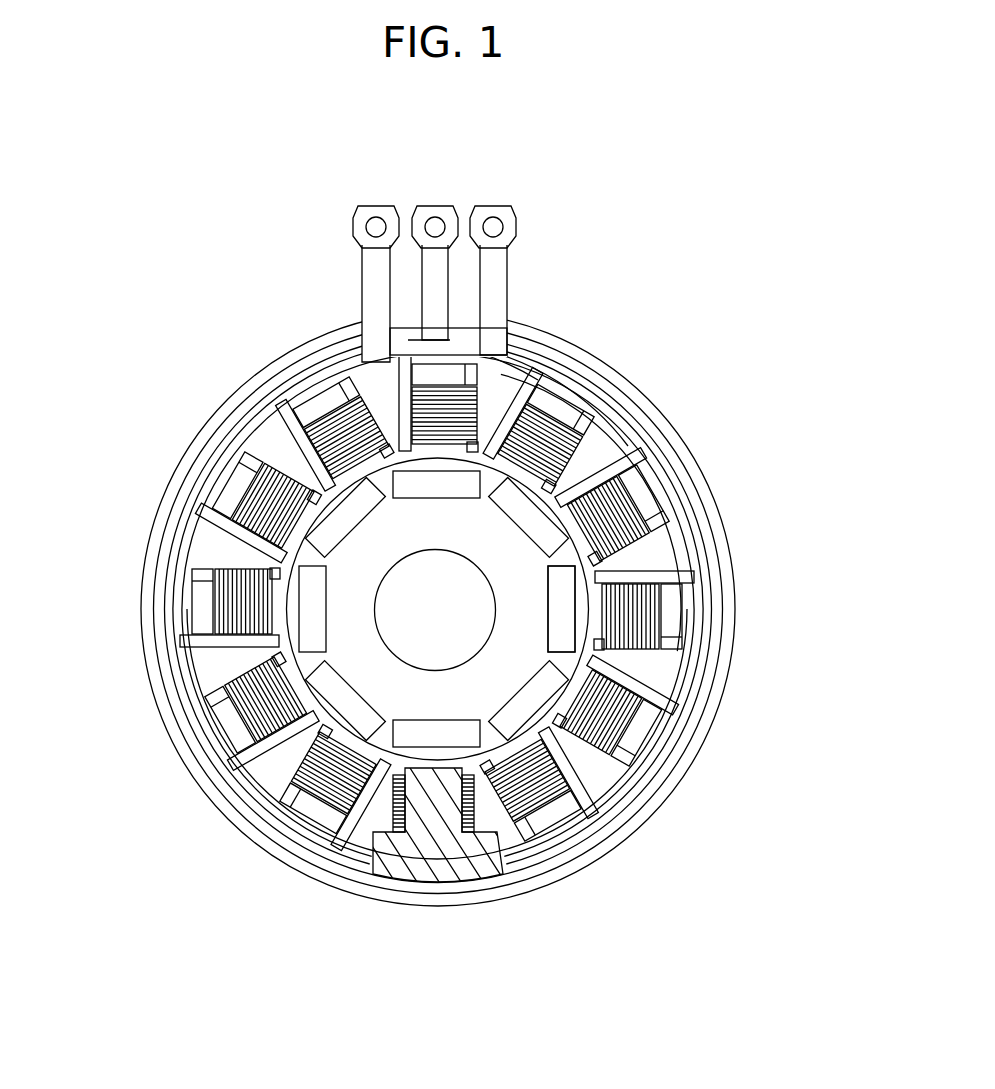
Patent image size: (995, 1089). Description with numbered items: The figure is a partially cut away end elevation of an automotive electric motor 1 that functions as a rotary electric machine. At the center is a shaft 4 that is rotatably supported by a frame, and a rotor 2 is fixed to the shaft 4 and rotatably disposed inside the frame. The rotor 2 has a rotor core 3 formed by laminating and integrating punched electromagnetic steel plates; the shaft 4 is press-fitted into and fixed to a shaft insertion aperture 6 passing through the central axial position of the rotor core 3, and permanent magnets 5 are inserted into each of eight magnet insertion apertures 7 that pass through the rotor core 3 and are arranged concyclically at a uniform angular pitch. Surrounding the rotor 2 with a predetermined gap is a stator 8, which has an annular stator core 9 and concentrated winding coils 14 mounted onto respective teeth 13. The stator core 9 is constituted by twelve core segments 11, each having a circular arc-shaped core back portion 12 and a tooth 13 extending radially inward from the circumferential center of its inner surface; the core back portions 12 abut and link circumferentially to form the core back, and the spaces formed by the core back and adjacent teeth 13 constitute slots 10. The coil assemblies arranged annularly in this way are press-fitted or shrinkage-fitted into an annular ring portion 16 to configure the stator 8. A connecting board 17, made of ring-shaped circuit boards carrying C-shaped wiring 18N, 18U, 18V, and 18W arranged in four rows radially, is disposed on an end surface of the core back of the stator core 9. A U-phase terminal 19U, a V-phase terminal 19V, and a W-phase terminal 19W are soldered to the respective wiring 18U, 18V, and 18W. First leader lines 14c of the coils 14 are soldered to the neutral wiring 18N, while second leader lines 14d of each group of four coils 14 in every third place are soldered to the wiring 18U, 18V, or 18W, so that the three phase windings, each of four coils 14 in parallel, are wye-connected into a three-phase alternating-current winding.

The automotive electric motor 1 is at (151, 151).
The rotor 2 is at (531, 624).
The rotor core 3 is at (572, 554).
The shaft 4 is at (605, 772).
The permanent magnets 5 is at (568, 601).
The shaft insertion aperture 6 is at (453, 650).
The magnet insertion apertures 7 is at (573, 637).
The stator 8 is at (402, 616).
The stator core 9 is at (355, 872).
The slots 10 is at (288, 760).
The core segments 11 is at (436, 891).
The core back portions 12 is at (403, 867).
The teeth 13 is at (432, 807).
The concentrated winding coils 14 is at (395, 601).
The first leader lines 14c is at (242, 490).
The second leader lines 14d is at (198, 507).
The ring portion 16 is at (277, 367).
The connecting board 17 is at (330, 358).
The U-phase wiring 18U is at (520, 345).
The V-phase wiring 18V is at (582, 388).
The W-phase wiring 18W is at (617, 433).
The neutral wiring 18N is at (645, 483).
The U-phase terminal 19U is at (437, 205).
The V-phase terminal 19V is at (495, 205).
The W-phase terminal 19W is at (376, 205).